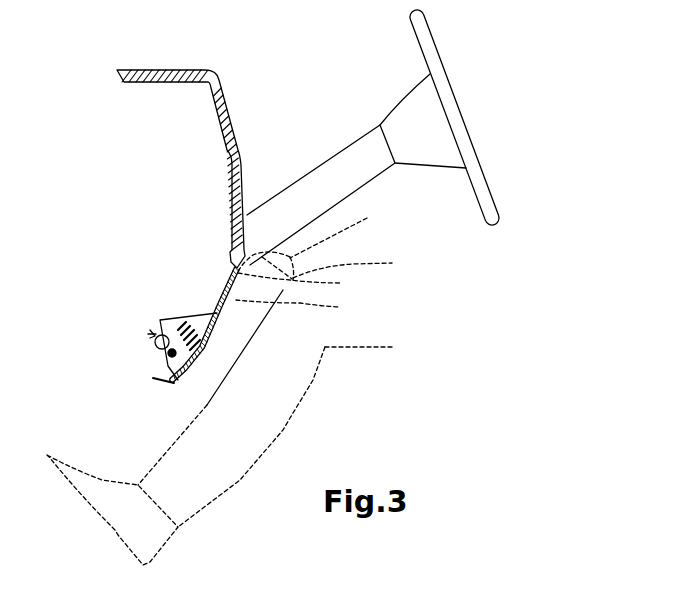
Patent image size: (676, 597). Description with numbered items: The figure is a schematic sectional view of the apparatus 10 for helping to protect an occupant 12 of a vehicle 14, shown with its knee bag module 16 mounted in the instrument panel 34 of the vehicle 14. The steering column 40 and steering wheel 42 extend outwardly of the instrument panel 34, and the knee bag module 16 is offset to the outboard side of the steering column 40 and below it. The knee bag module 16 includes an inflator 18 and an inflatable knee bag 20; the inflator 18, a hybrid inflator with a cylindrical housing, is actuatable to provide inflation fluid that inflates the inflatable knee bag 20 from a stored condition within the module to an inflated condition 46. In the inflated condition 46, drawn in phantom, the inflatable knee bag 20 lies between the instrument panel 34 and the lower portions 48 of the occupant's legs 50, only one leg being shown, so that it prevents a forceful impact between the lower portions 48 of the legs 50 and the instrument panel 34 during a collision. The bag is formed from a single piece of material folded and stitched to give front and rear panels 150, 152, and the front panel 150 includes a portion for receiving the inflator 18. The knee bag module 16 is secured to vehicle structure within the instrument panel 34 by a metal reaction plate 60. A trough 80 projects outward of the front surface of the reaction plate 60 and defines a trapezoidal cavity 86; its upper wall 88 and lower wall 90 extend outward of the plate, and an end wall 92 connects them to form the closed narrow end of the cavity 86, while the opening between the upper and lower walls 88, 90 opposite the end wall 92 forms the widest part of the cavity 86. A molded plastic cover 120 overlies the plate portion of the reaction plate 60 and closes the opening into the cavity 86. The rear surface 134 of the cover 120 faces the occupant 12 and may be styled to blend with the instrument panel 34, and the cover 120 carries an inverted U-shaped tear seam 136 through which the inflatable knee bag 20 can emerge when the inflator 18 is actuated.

The apparatus 10 is at (134, 238).
The occupant 12 is at (400, 326).
The vehicle 14 is at (176, 44).
The knee bag module 16 is at (198, 288).
The inflator 18 is at (155, 344).
The inflatable knee bag 20 is at (178, 318).
The instrument panel 34 is at (213, 68).
The steering column 40 is at (323, 182).
The steering wheel 42 is at (495, 179).
The inflated condition 46 is at (315, 242).
The lower portions of the legs 48 is at (257, 414).
The legs 50 is at (366, 338).
The reaction plate 60 is at (218, 288).
The trough 80 is at (143, 360).
The cavity 86 is at (157, 333).
The upper wall 88 is at (185, 322).
The lower wall 90 is at (165, 363).
The end wall 92 is at (158, 328).
The cover 120 is at (203, 379).
The rear surface 134 is at (205, 347).
The tear seam 136 is at (212, 323).
The front panel 150 is at (307, 283).
The rear panel 152 is at (306, 307).